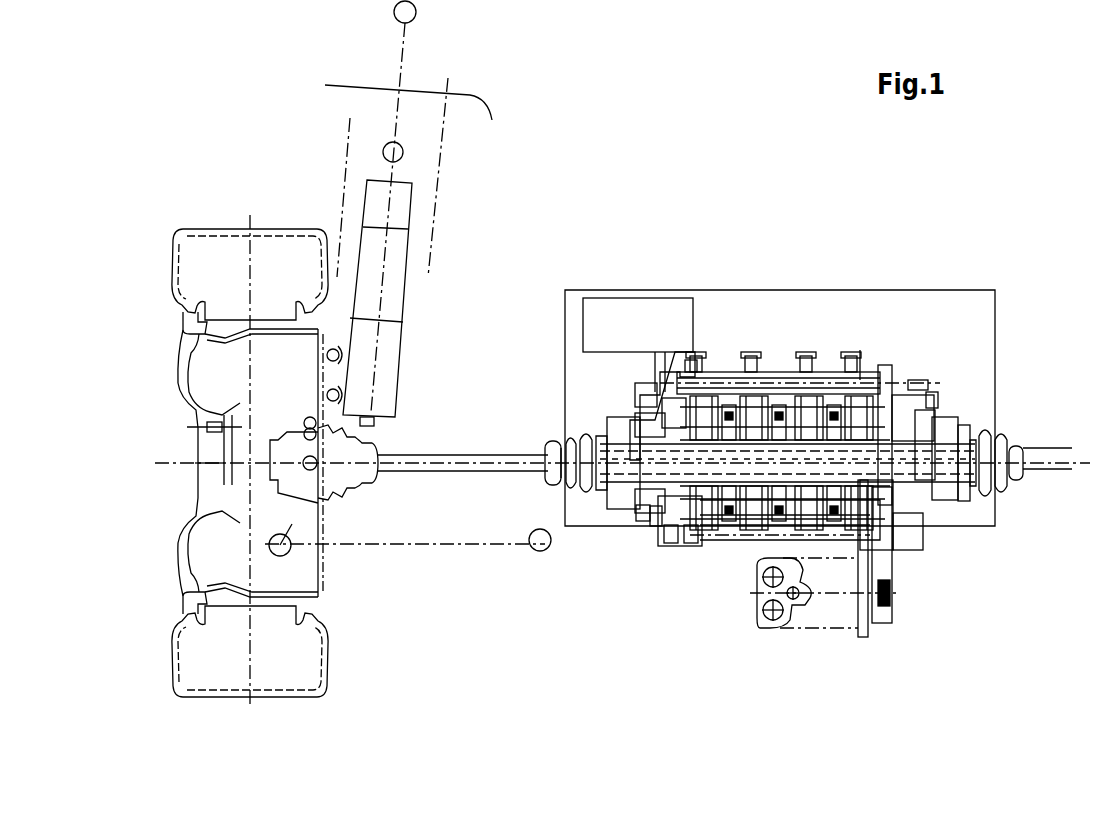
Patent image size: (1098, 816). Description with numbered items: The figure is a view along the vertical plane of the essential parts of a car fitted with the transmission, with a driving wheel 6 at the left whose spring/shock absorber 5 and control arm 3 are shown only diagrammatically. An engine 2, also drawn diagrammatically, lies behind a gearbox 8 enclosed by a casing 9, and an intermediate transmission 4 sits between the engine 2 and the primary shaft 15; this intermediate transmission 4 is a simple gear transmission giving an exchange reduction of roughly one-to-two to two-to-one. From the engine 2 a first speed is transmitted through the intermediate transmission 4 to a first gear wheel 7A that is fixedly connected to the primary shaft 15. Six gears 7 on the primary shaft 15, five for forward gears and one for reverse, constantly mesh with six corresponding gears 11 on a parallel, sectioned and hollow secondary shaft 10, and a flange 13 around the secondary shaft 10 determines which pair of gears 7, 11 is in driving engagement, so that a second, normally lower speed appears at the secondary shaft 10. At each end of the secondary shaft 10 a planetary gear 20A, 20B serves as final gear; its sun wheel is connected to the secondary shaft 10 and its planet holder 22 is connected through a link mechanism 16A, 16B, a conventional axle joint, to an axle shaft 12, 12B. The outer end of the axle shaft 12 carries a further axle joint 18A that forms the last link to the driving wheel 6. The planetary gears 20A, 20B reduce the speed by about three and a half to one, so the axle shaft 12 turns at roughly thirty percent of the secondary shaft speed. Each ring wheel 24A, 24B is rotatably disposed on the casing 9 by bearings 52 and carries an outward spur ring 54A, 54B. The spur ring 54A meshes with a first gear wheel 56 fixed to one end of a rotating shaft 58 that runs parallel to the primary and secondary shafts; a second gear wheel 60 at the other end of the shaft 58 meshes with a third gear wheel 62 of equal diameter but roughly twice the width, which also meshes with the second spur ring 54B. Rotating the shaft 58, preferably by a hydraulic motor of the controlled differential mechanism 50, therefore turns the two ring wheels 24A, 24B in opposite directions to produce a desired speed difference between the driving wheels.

The engine 2 is at (776, 316).
The control arm 3 is at (345, 552).
The intermediate transmission 4 is at (602, 318).
The spring/shock absorber 5 is at (455, 245).
The driving wheel 6 is at (219, 222).
The gears 7 is at (743, 345).
The first gear wheel 7A is at (642, 365).
The gearbox 8 is at (890, 372).
The casing 9 is at (912, 393).
The secondary shaft 10 is at (662, 528).
The gears 11 is at (748, 523).
The axle shaft 12 is at (470, 465).
The axle shaft 12B is at (1052, 447).
The flange 13 is at (882, 612).
The primary shaft 15 is at (808, 380).
The link mechanism 16A is at (560, 440).
The link mechanism 16B is at (995, 435).
The axle joint 18A is at (353, 470).
The planetary gear 20A is at (620, 402).
The planetary gear 20B is at (935, 405).
The planet holder 22 is at (637, 508).
The ring wheel 24A is at (648, 524).
The ring wheel 24B is at (920, 522).
The differential mechanism 50 is at (812, 652).
The bearings 52 is at (932, 398).
The spur ring 54A is at (645, 400).
The spur ring 54B is at (920, 385).
The first gear wheel 56 is at (905, 545).
The rotating shaft 58 is at (793, 545).
The second gear wheel 60 is at (690, 548).
The third gear wheel 62 is at (672, 548).